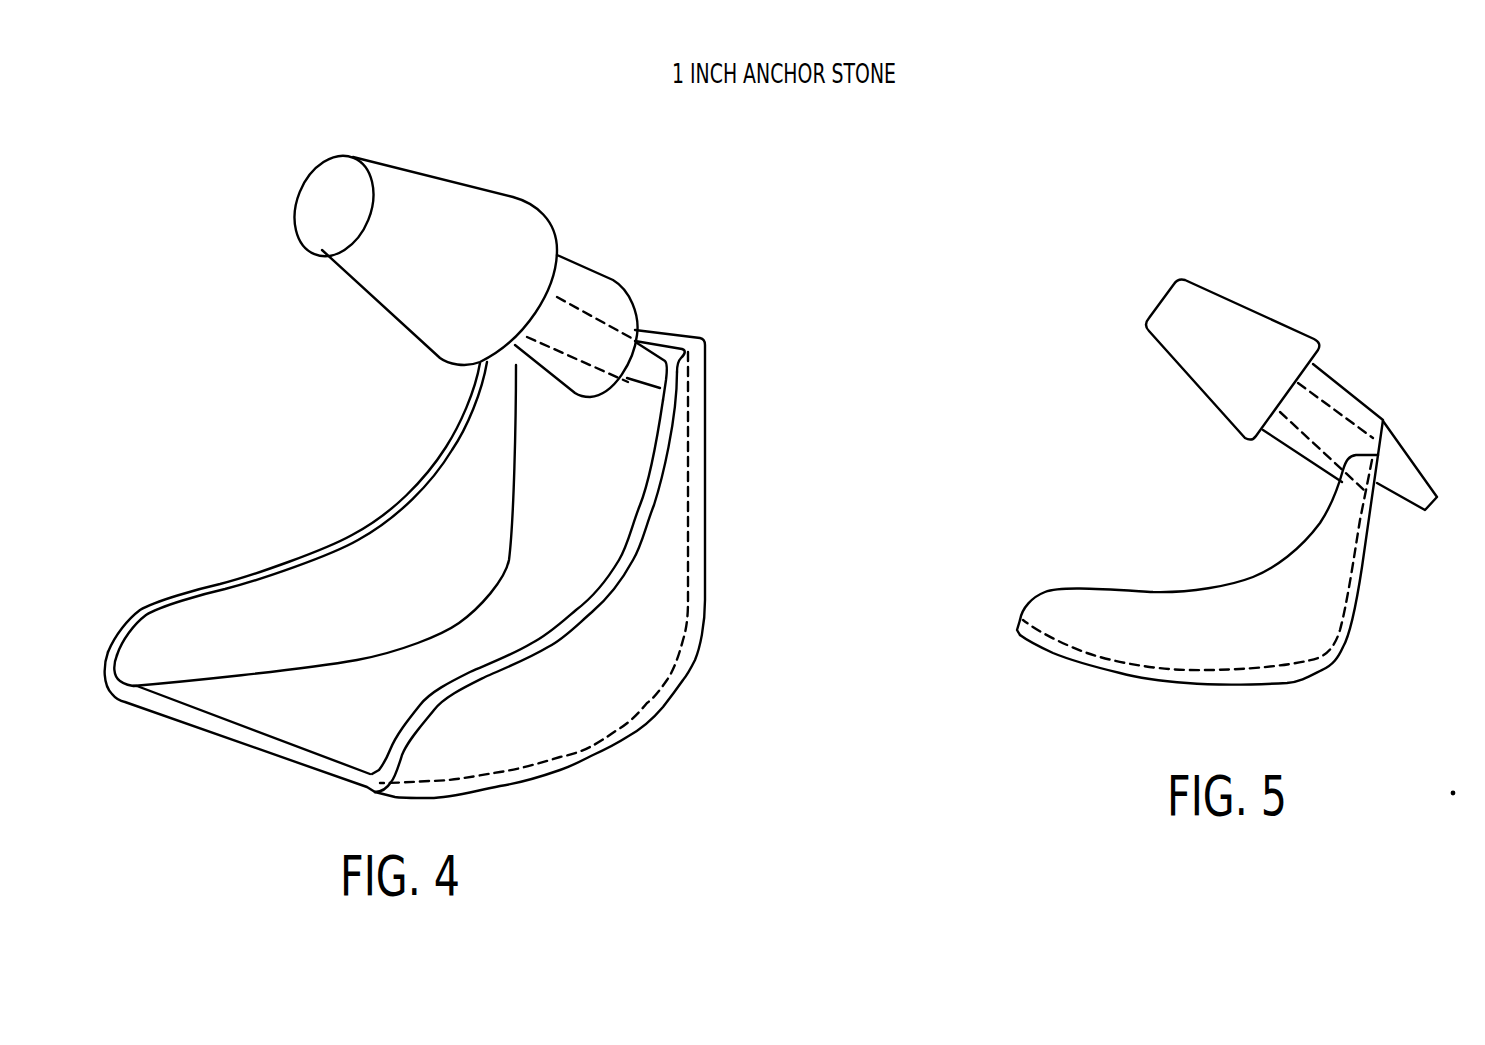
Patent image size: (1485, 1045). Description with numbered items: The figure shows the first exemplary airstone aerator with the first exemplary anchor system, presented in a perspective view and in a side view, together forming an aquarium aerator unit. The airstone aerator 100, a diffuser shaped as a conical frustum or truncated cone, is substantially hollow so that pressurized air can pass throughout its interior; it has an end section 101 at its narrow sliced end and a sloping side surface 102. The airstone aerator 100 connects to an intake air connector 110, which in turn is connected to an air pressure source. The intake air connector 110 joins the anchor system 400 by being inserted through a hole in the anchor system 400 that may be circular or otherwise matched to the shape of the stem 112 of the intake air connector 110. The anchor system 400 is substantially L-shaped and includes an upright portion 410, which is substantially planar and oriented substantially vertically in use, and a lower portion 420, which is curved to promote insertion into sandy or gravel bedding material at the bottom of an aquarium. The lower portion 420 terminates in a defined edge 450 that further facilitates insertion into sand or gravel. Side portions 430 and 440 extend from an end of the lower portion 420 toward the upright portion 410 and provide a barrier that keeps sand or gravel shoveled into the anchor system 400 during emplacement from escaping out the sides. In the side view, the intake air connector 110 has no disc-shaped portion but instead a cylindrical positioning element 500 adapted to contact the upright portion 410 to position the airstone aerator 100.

In FIG. 4, the airstone aerator 100 is at (325, 318).
In FIG. 5, the airstone aerator 100 is at (1156, 395).
In FIG. 4, the end section 101 is at (354, 214).
In FIG. 4, the side surface 102 is at (453, 180).
In FIG. 4, the intake air connector 110 is at (615, 198).
In FIG. 5, the intake air connector 110 is at (1393, 392).
In FIG. 5, the stem 112 is at (1416, 477).
In FIG. 4, the anchor system 400 is at (309, 487).
In FIG. 5, the anchor system 400 is at (1210, 524).
In FIG. 5, the upright portion 410 is at (1363, 567).
In FIG. 4, the lower portion 420 is at (220, 728).
In FIG. 5, the lower portion 420 is at (1183, 683).
In FIG. 4, the side portion 430 is at (215, 607).
In FIG. 5, the side portion 430 is at (1083, 602).
In FIG. 4, the side portion 440 is at (580, 737).
In FIG. 5, the side portion 440 is at (1197, 565).
In FIG. 4, the defined edge 450 is at (273, 747).
In FIG. 5, the defined edge 450 is at (1017, 627).
In FIG. 5, the cylindrical positioning element 500 is at (1350, 387).